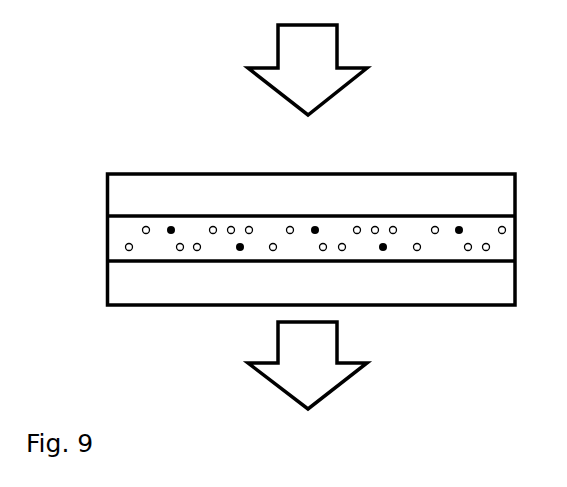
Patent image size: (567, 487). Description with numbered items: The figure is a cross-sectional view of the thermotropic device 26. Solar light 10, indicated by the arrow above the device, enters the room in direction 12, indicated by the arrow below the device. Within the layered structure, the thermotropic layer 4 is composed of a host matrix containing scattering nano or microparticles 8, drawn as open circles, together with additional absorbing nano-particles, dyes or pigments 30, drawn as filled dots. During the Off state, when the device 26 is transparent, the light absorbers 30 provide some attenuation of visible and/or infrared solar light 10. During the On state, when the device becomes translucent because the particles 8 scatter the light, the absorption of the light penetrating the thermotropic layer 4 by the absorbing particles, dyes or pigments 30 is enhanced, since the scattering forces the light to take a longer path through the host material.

The solar light 10 is at (307, 70).
The direction 12 is at (307, 365).
The thermotropic device 26 is at (413, 125).
The thermotropic layer 4 is at (413, 226).
The scattering nano or microparticles 8 is at (439, 222).
The absorbing nano-particles, dyes or pigments 30 is at (170, 227).